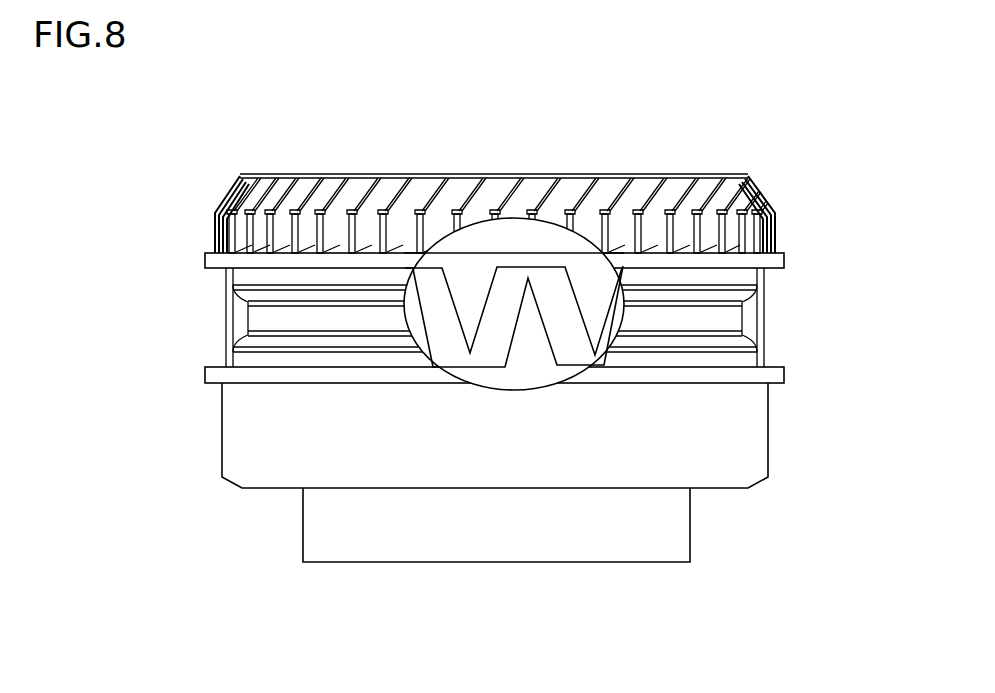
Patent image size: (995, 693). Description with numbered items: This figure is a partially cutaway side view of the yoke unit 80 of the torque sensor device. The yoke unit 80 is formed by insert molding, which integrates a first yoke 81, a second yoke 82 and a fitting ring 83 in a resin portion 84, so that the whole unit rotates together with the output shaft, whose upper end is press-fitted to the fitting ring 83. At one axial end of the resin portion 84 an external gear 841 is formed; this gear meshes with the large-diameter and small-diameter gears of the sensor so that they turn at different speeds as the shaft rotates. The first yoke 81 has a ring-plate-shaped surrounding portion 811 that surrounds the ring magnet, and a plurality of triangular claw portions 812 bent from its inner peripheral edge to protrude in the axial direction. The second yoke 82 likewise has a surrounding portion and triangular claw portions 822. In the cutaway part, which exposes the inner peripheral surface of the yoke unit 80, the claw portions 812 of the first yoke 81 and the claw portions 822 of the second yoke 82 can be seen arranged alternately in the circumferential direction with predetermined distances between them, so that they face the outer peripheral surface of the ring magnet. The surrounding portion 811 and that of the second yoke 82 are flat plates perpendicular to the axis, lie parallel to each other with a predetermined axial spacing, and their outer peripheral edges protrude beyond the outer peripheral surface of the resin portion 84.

The yoke unit 80 is at (208, 141).
The external gear 841 is at (780, 190).
The surrounding portion 811 is at (785, 258).
The resin portion 84 is at (745, 320).
The claw portions 812 is at (785, 372).
The first yoke 81 is at (527, 252).
The claw portions 822 is at (523, 347).
The second yoke 82 is at (518, 362).
The fitting ring 83 is at (433, 563).